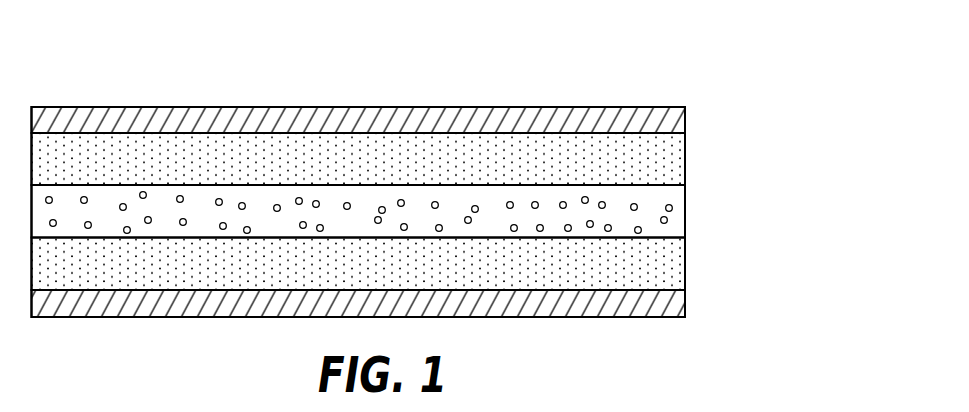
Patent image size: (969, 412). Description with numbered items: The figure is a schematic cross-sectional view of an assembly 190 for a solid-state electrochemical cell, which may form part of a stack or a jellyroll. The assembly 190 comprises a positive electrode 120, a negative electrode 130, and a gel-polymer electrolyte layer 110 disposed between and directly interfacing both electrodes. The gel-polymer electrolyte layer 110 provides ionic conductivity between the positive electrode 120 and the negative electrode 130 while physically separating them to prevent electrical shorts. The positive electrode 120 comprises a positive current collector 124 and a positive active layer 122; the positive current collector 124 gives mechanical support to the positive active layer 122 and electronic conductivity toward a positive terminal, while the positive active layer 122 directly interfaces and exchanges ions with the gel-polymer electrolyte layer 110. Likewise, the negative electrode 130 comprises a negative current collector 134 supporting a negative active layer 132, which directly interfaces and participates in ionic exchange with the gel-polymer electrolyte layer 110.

The assembly 190 is at (423, 193).
The positive electrode 120 is at (395, 107).
The positive current collector 124 is at (559, 120).
The positive active layer 122 is at (642, 150).
The gel-polymer electrolyte layer 110 is at (685, 221).
The negative electrode 130 is at (399, 306).
The negative active layer 132 is at (595, 275).
The negative current collector 134 is at (652, 302).